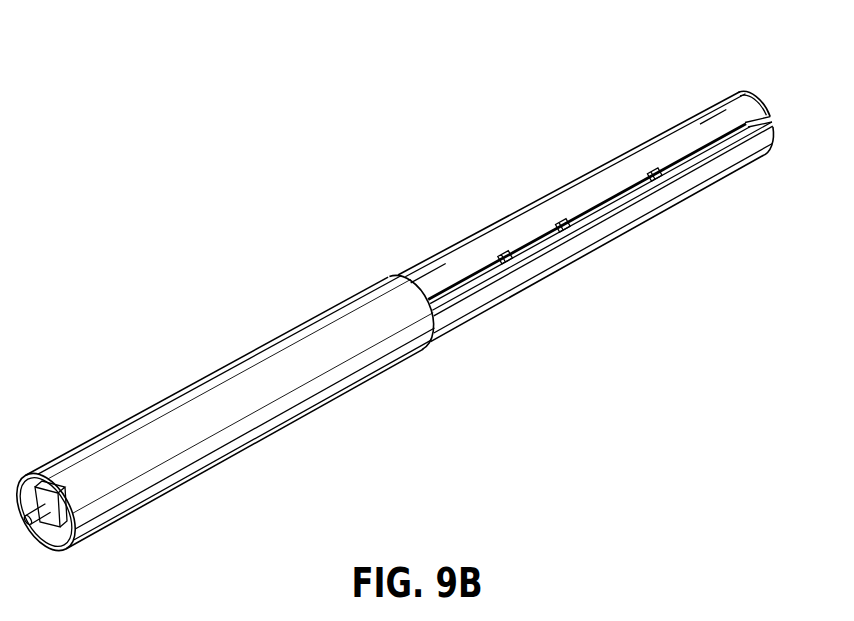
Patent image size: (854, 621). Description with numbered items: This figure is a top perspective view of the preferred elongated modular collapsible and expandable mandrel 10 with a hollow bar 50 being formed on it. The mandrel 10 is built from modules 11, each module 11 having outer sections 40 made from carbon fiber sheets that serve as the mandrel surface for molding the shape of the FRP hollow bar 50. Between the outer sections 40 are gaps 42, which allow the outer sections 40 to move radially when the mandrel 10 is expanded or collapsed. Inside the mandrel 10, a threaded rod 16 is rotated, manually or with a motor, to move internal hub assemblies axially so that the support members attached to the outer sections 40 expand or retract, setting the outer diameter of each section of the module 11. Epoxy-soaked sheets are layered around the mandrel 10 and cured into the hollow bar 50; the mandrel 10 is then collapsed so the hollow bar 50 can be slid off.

The modular mandrel 10 is at (774, 101).
The module 11 is at (705, 107).
The threaded rod 16 is at (46, 530).
The outer section 40 is at (560, 192).
The gap 42 is at (774, 130).
The hollow bar 50 is at (337, 378).